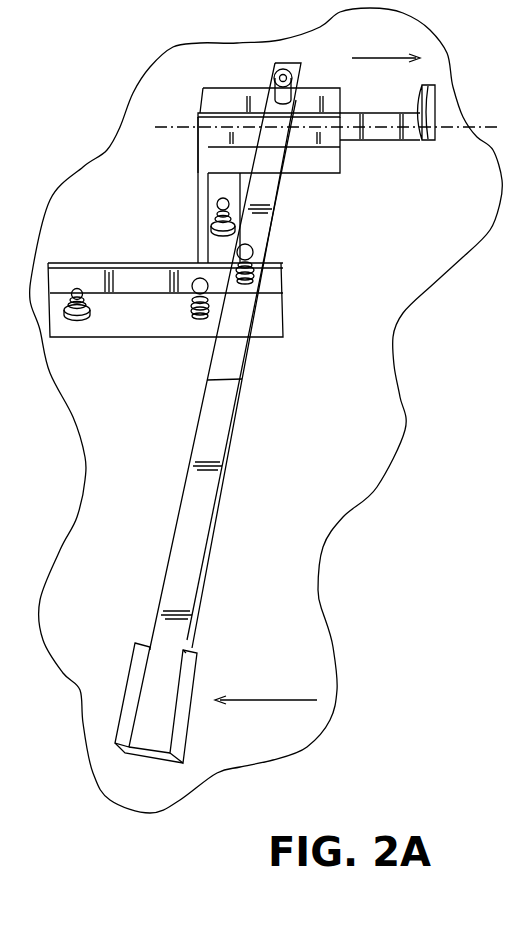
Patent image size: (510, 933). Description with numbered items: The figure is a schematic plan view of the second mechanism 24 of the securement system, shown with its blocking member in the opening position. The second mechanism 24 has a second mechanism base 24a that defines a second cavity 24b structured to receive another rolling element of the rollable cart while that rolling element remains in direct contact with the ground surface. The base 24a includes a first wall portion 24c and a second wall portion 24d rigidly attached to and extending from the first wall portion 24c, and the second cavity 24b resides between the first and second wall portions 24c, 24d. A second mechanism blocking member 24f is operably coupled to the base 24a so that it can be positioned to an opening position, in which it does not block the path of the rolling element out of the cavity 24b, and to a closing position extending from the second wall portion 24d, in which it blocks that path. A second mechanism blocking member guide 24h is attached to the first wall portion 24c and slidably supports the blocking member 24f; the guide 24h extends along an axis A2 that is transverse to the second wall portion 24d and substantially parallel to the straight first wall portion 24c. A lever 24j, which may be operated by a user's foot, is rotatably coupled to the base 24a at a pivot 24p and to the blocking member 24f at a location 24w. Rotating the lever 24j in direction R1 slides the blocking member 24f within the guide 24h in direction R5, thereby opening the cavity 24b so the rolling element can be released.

The second mechanism 24 is at (386, 286).
The second mechanism base 24a is at (288, 338).
The second cavity 24b is at (158, 239).
The first wall portion 24c is at (146, 310).
The second wall portion 24d is at (214, 192).
The second mechanism blocking member 24f is at (373, 142).
The second mechanism blocking member guide 24h is at (330, 86).
The lever 24j is at (155, 708).
The pivot 24p is at (252, 271).
The location 24w is at (270, 83).
The axis A2 is at (462, 136).
The direction R5 is at (386, 50).
The direction R1 is at (266, 692).